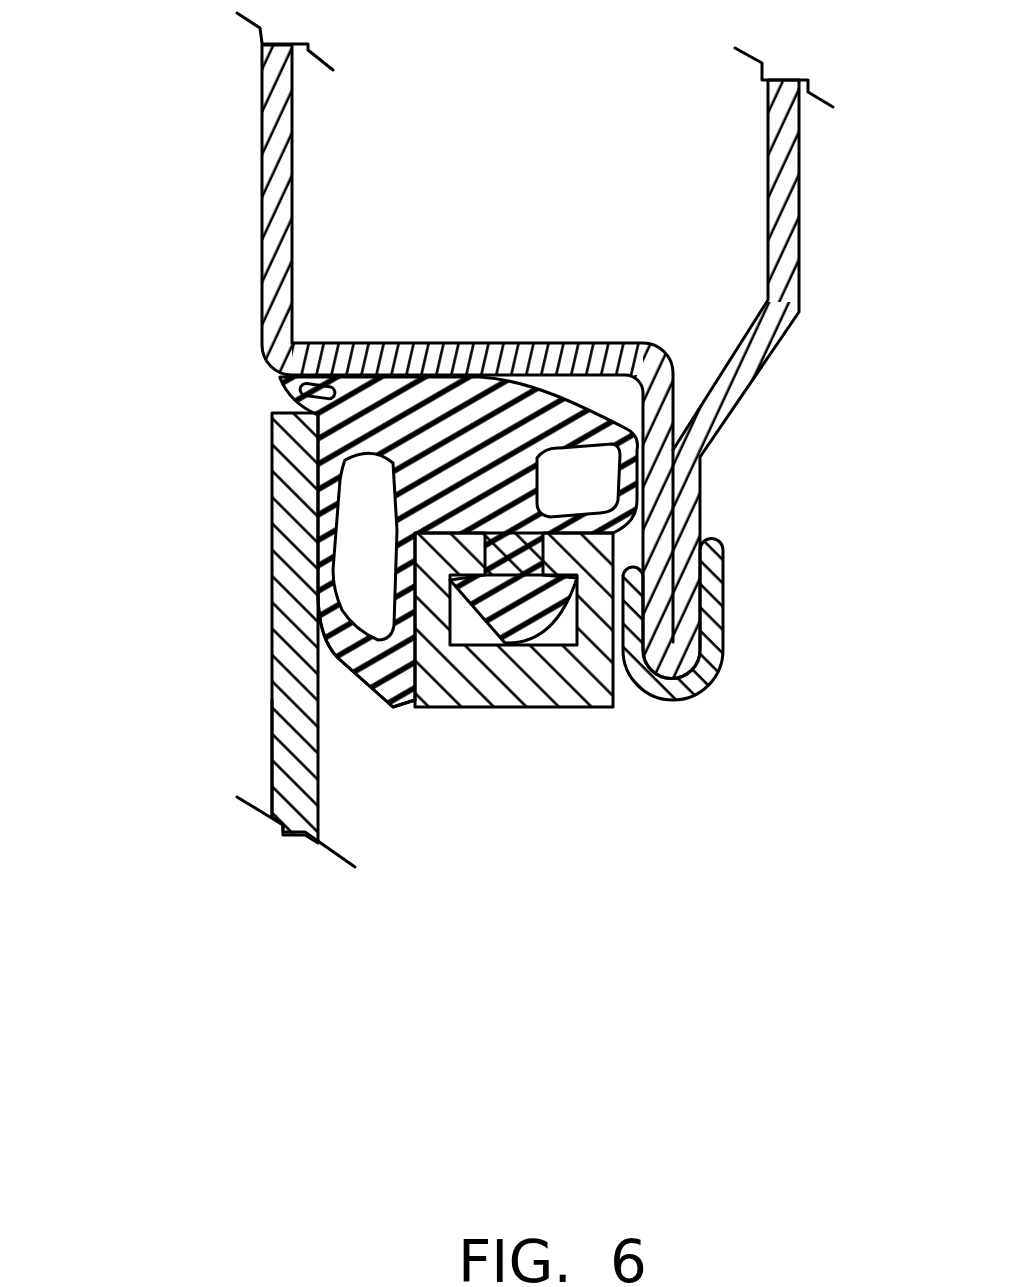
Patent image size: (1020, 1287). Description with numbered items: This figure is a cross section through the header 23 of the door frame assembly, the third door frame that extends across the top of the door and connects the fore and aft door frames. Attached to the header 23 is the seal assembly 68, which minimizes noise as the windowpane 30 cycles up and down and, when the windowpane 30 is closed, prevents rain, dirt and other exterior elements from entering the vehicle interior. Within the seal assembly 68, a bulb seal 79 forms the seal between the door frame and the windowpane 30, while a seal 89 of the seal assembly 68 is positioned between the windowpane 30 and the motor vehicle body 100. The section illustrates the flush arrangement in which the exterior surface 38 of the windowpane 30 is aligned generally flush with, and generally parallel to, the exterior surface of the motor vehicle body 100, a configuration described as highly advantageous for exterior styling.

The motor vehicle body 100 is at (262, 240).
The seal 89 is at (280, 380).
The seal assembly 68 is at (531, 393).
The bulb seal 79 is at (350, 673).
The exterior surface 38 is at (272, 562).
The windowpane 30 is at (275, 738).
The header 23 is at (564, 708).